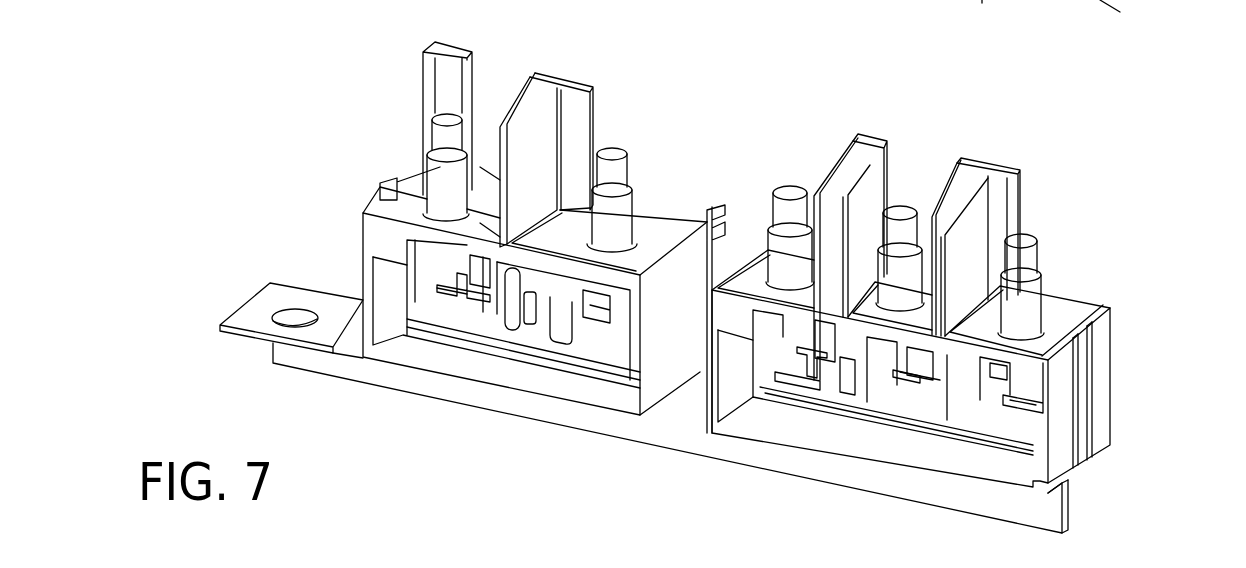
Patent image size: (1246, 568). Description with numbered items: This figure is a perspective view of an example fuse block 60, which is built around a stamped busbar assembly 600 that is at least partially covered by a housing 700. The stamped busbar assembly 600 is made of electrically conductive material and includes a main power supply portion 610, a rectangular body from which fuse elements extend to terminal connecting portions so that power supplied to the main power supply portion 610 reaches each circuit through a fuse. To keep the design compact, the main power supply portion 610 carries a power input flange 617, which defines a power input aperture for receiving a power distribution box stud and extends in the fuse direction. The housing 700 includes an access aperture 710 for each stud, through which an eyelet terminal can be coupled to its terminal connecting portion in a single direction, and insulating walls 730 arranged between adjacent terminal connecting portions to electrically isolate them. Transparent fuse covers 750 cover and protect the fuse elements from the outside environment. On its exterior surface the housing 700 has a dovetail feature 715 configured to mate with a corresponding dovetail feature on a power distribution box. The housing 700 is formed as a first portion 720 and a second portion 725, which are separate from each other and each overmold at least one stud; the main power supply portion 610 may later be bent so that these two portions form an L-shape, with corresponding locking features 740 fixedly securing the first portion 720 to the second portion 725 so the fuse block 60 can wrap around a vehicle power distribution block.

The fuse block 60 is at (291, 184).
The power input flange 617 is at (270, 308).
The housing 700 is at (1113, 320).
The access aperture 710 is at (490, 78).
The dovetail feature 715 is at (383, 187).
The first portion 720 is at (363, 213).
The second portion 725 is at (1113, 375).
The insulating wall 730 is at (590, 142).
The locking feature 740 is at (713, 212).
The fuse cover 750 is at (482, 308).
The stamped busbar assembly 600 is at (1100, 0).
The main power supply portion 610 is at (982, 0).